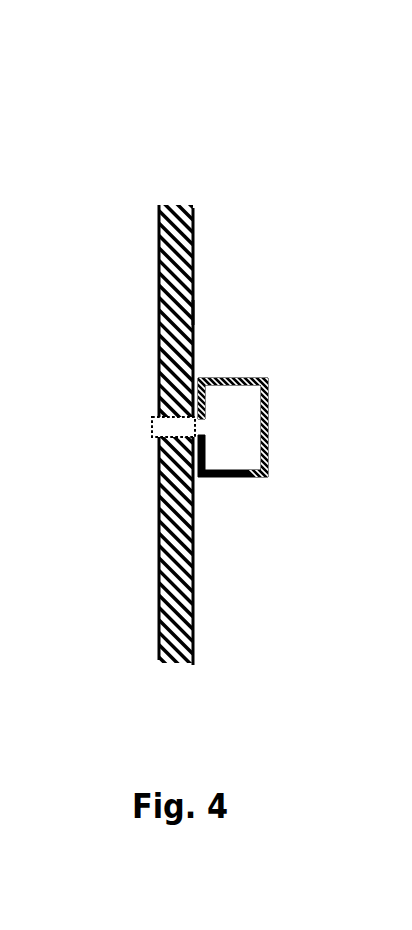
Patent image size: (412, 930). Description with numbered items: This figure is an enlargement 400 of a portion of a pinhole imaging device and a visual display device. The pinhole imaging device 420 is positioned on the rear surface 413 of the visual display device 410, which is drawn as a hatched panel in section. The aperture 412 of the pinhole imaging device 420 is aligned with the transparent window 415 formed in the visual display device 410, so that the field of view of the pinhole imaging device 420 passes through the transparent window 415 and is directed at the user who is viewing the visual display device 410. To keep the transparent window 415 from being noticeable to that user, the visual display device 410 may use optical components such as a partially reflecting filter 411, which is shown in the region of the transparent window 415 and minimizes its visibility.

The mounting assembly 400 is at (195, 48).
The visual display device 410 is at (155, 225).
The partially reflecting filter 411 is at (175, 428).
The aperture 412 is at (202, 427).
The rear surface 413 is at (197, 312).
The transparent window 415 is at (168, 427).
The pinhole imaging device 420 is at (268, 387).